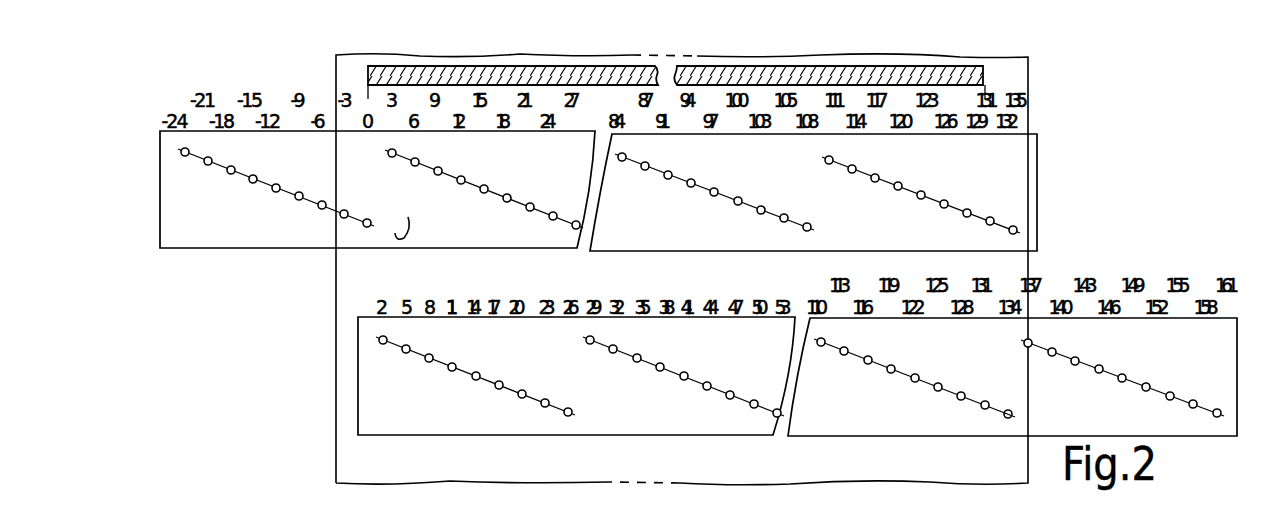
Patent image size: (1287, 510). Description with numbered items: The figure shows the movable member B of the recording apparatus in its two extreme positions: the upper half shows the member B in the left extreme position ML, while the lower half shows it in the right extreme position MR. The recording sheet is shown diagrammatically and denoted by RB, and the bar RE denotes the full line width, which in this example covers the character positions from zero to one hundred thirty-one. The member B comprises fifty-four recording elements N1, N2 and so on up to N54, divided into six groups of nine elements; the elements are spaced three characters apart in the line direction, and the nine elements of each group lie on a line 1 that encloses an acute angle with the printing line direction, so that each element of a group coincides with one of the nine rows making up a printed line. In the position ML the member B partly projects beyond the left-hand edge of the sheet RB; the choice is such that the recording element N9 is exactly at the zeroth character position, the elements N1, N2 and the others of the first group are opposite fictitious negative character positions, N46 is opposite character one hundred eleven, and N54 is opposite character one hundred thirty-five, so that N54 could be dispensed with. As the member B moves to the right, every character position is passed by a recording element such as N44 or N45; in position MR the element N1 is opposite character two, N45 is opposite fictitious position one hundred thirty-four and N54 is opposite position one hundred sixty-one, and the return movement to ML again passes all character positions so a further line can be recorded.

The recording sheet RB is at (682, 269).
The bar RE is at (983, 84).
The movable member B is at (1037, 150).
The extreme position (left) ML is at (137, 268).
The extreme position (right) MR is at (1222, 463).
The recording element N1 is at (196, 153).
The recording element N2 is at (223, 162).
The recording element N9 is at (375, 212).
The line 1 is at (410, 214).
The recording element N45 is at (914, 318).
The recording element N46 is at (846, 152).
The recording element N54 is at (1013, 219).
The recording element N44 is at (983, 401).